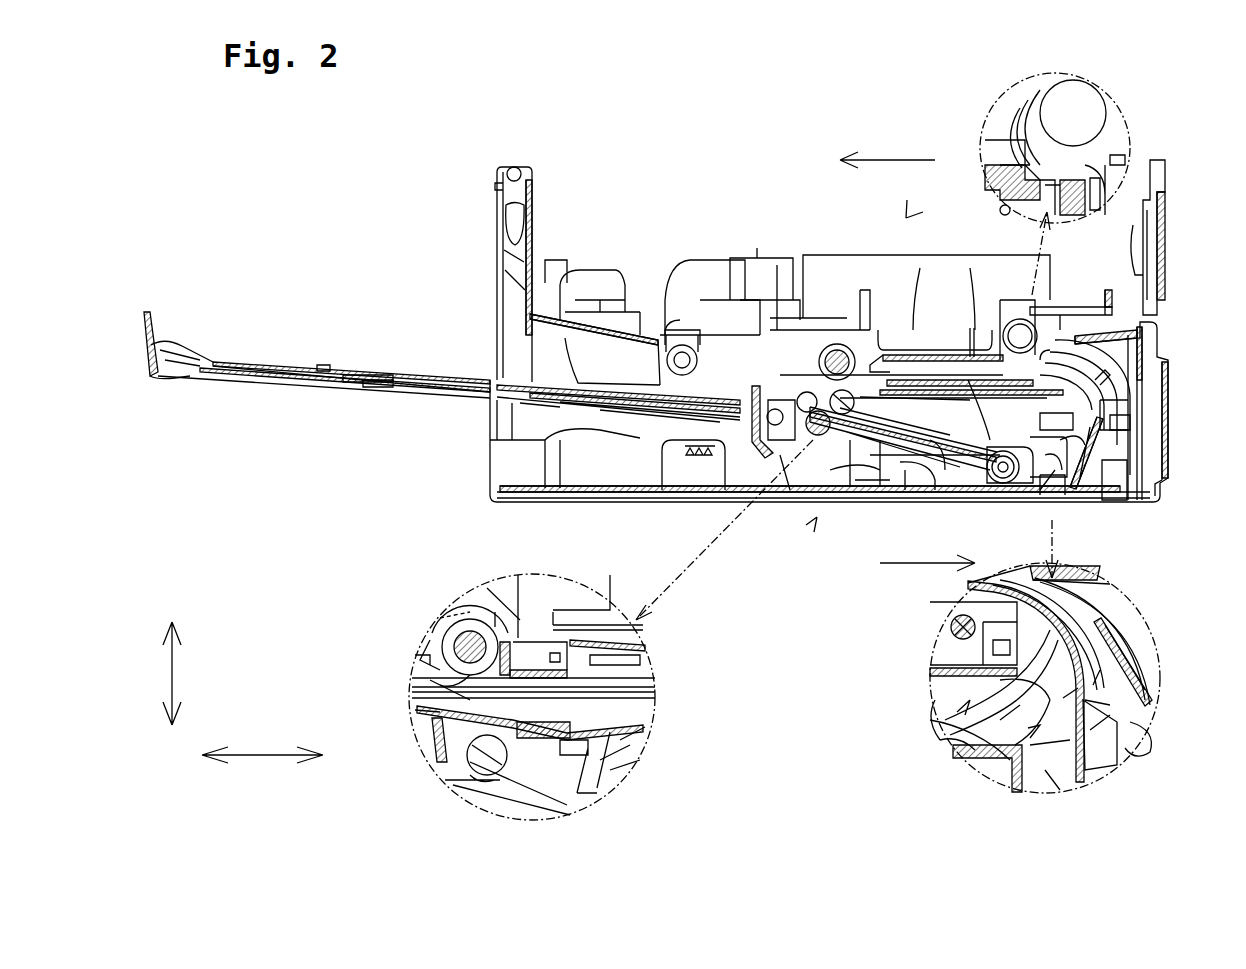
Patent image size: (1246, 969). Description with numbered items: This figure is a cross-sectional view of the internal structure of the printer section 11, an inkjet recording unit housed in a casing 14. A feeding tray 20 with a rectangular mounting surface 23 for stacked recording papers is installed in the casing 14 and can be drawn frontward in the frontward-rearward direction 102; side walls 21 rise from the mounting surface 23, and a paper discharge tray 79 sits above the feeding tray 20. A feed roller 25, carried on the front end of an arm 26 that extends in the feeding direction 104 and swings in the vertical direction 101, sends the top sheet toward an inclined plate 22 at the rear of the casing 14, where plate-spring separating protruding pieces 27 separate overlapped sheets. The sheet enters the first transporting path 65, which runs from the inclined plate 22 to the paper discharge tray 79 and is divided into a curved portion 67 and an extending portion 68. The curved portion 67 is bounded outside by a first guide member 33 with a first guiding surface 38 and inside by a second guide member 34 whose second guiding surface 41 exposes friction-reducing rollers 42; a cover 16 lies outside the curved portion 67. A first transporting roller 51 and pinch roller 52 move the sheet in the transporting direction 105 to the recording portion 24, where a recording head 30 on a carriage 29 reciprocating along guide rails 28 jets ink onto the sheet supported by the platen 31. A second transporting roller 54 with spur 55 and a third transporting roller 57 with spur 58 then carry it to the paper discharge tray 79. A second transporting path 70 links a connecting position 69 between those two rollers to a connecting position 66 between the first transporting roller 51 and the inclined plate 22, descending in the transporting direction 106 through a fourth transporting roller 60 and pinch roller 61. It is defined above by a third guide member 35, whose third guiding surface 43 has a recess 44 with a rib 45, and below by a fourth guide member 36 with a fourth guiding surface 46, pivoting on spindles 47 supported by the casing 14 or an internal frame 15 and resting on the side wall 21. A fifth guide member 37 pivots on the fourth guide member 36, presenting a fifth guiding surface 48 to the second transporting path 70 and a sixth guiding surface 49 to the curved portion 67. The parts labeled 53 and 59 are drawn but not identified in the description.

The printer section 11 is at (681, 150).
The casing 14 is at (497, 188).
The internal frame 15 is at (413, 686).
The cover 16 is at (1170, 458).
The feeding tray 20 is at (817, 517).
The side wall 21 is at (1040, 413).
The inclined plate 22 is at (1120, 500).
The mounting surface 23 is at (862, 492).
The recording portion 24 is at (906, 218).
The feed roller 25 is at (1027, 500).
The arm 26 is at (916, 494).
The separating protruding pieces 27 is at (1078, 500).
The guide rails 28 is at (836, 300).
The carriage 29 is at (880, 256).
The recording head 30 is at (908, 330).
The platen 31 is at (603, 630).
The first guide member 33 is at (1135, 672).
The second guide member 34 is at (963, 745).
The third guide member 35 is at (1008, 292).
The fourth guide member 36 is at (952, 388).
The fifth guide member 37 is at (1070, 788).
The first guiding surface 38 is at (1100, 655).
The second guiding surface 41 is at (1100, 584).
The rollers 42 is at (1115, 628).
The third guiding surface 43 is at (625, 735).
The recess 44 is at (960, 740).
The rib 45 is at (1050, 675).
The fourth guiding surface 46 is at (990, 500).
The spindle 47 is at (440, 758).
The fifth guiding surface 48 is at (1105, 755).
The sixth guiding surface 49 is at (1090, 770).
The first transporting roller 51 is at (1105, 120).
The pinch roller 52 is at (1022, 138).
The pinch roller 53 is at (682, 355).
The second transporting roller 54 is at (455, 620).
The spur 55 is at (487, 588).
The third transporting roller 57 is at (642, 312).
The spur 58 is at (688, 310).
The idler roller 59 is at (837, 362).
The fourth transporting roller 60 is at (600, 665).
The pinch roller 61 is at (610, 760).
The first transporting path 65 is at (538, 625).
The connecting position 66 is at (1015, 785).
The curved portion 67 is at (1140, 750).
The extending portion 68 is at (976, 345).
The connecting position 69 is at (742, 332).
The second transporting path 70 is at (410, 690).
The paper discharge tray 79 is at (415, 392).
The vertical direction 101 is at (174, 668).
The frontward-rearward direction 102 is at (262, 755).
The feeding direction 104 is at (897, 565).
The transporting direction 105 is at (905, 158).
The transporting direction 106 is at (760, 265).